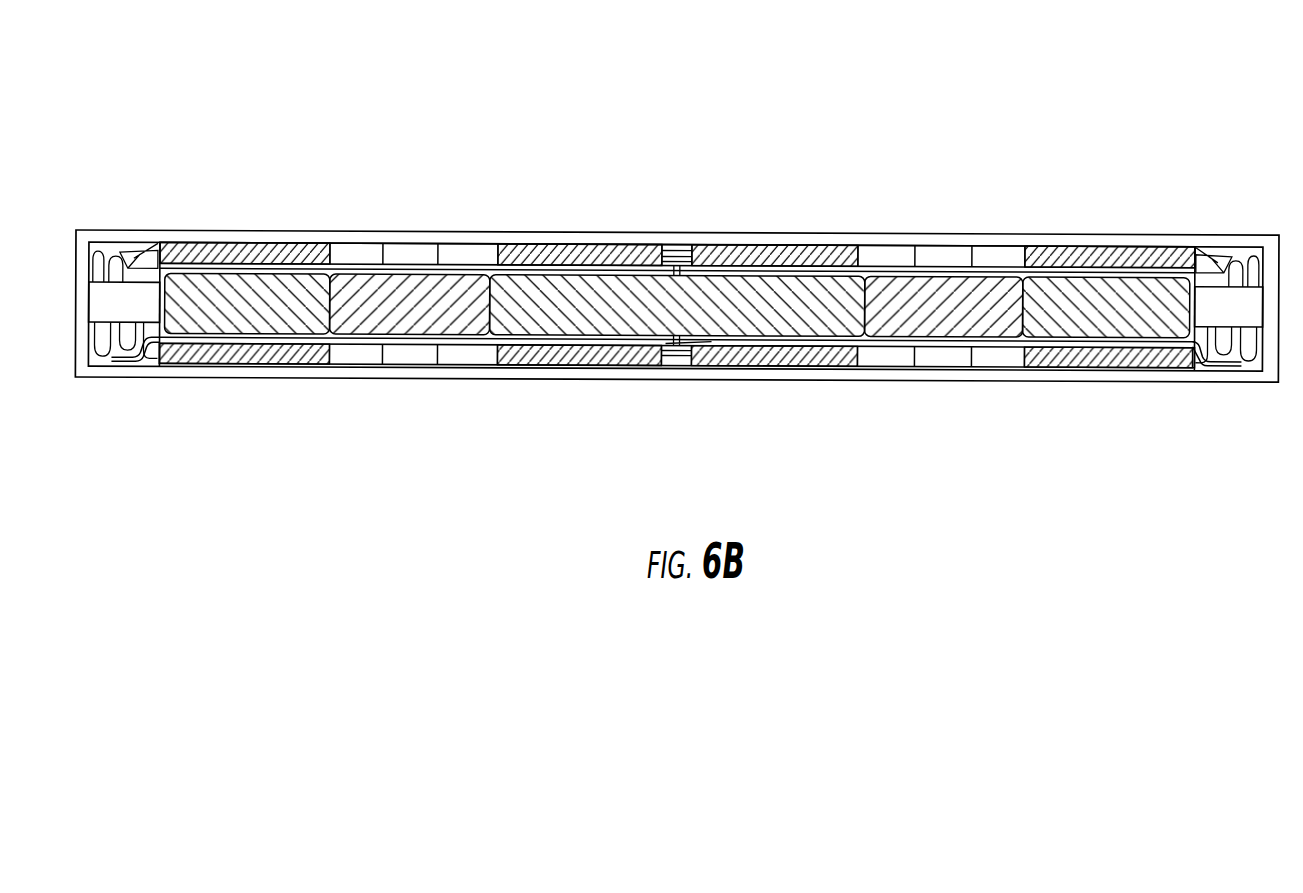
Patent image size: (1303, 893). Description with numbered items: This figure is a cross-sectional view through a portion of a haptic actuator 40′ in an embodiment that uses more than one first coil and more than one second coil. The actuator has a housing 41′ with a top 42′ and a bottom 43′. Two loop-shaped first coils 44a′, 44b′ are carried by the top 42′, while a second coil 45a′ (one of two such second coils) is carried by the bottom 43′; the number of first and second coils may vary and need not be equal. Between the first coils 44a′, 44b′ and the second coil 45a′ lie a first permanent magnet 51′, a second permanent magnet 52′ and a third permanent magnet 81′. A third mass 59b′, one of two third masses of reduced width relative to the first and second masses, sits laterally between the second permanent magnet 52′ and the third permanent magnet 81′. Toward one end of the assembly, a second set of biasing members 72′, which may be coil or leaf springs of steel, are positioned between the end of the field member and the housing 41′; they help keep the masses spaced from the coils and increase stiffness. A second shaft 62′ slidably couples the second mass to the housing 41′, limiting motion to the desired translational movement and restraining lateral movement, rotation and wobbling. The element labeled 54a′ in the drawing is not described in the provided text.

The haptic actuator 40′ is at (306, 106).
The housing 41′ is at (835, 224).
The top 42′ is at (524, 241).
The bottom 43′ is at (548, 370).
The first coil 44a′ is at (250, 242).
The first coil 44b′ is at (766, 242).
The second coil 45a′ is at (258, 363).
The first permanent magnet 51′ is at (288, 311).
The second permanent magnet 52′ is at (1058, 326).
The intermediate core member 54a′ is at (418, 288).
The third mass 59b′ is at (958, 281).
The second shaft 62′ is at (118, 310).
The second set of biasing members 72′ is at (122, 262).
The third permanent magnet 81′ is at (632, 324).